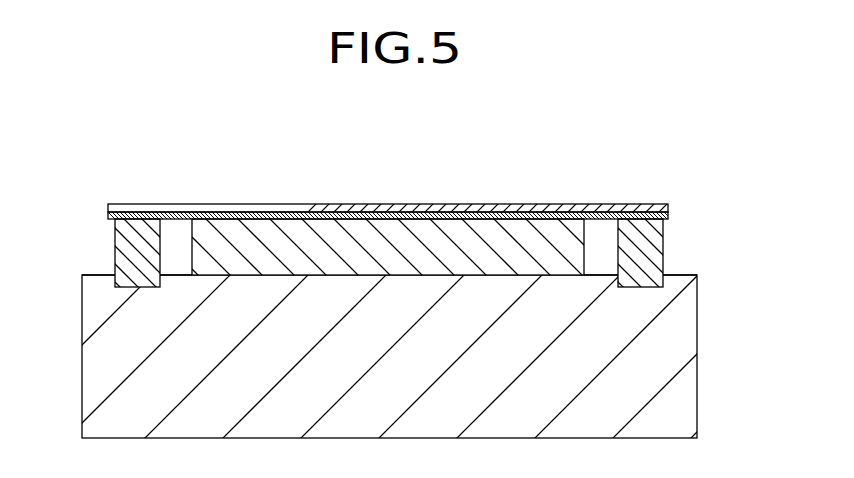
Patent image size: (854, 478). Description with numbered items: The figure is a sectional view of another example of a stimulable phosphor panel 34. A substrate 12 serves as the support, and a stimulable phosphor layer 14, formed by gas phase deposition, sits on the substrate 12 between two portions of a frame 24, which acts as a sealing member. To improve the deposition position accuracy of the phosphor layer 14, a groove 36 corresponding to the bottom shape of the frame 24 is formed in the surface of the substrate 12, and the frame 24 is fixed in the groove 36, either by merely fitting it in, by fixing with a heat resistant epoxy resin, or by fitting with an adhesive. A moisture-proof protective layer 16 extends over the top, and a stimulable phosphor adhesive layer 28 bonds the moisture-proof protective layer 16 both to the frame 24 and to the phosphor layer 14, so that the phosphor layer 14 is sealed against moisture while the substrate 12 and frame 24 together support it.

The substrate 12 is at (683, 352).
The stimulable phosphor layer 14 is at (447, 233).
The moisture-proof protective layer 16 is at (510, 207).
The frame 24 is at (128, 232).
The stimulable phosphor adhesive layer 28 is at (558, 216).
The phosphor panel 34 is at (596, 141).
The groove 36 is at (116, 280).